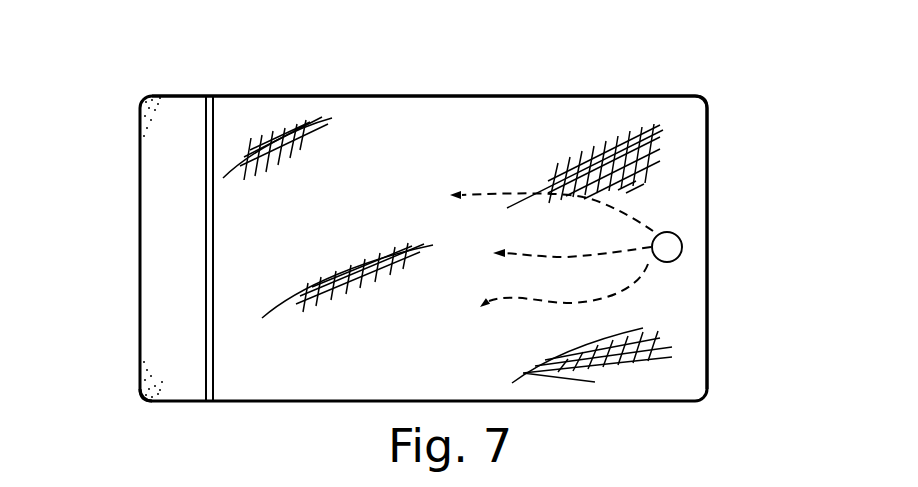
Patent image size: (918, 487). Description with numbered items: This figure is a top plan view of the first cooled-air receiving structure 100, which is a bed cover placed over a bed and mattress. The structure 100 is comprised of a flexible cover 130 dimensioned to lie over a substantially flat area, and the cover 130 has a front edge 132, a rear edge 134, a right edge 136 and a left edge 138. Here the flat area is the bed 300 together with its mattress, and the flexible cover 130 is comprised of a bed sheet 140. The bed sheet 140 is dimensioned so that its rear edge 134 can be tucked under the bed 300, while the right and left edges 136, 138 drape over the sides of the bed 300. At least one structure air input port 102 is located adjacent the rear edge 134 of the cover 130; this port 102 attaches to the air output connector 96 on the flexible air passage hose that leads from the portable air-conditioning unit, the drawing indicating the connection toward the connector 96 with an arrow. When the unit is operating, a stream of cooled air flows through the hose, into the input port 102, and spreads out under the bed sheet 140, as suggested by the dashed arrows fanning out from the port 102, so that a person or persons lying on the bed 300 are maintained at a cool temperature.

The cooled-air receiving structure 100 is at (446, 220).
The flexible cover 130 is at (505, 120).
The bed sheet 140 is at (462, 202).
The rear edge 134 is at (707, 110).
The right edge 136 is at (370, 96).
The front edge 132 is at (203, 165).
The bed 300 is at (165, 218).
The left edge 138 is at (168, 402).
The structure air input port 102 is at (670, 243).
The air output connector 96 is at (683, 247).